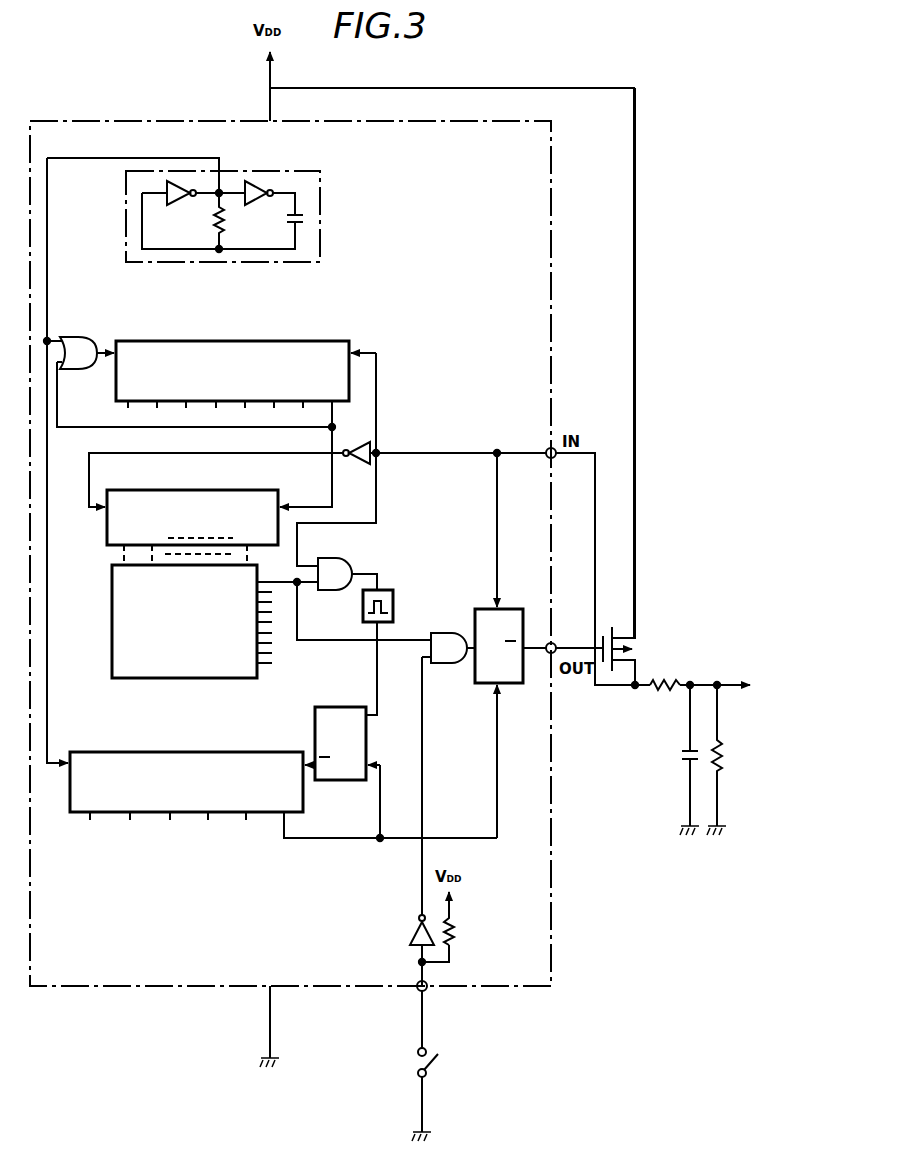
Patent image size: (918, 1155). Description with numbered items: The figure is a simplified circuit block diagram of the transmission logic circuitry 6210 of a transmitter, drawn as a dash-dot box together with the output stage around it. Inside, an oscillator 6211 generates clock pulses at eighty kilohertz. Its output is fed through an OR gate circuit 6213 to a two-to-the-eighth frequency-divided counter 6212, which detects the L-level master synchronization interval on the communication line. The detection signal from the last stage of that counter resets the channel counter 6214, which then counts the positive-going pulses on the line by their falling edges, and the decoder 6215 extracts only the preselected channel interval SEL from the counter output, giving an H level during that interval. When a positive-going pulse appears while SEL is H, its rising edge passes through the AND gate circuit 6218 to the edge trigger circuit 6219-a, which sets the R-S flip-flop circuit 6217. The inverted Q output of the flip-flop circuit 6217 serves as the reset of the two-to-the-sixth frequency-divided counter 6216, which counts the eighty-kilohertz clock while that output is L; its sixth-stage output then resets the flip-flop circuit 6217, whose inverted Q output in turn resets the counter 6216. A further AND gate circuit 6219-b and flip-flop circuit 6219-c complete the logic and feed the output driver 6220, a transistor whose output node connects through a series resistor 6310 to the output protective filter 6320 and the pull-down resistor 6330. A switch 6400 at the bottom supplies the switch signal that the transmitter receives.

The transmission logic circuitry 6210 is at (580, 174).
The oscillator 6211 is at (300, 171).
The 2^8-frequency-divided counter 6212 is at (218, 341).
The OR gate circuit 6213 is at (75, 337).
The channel counter 6214 is at (155, 490).
The decoder 6215 is at (133, 678).
The 2^6-frequency-divided counter 6216 is at (228, 752).
The flip-flop circuit 6217 is at (340, 781).
The AND gate circuit 6218 is at (337, 546).
The edge trigger circuit 6219-a is at (388, 590).
The AND gate circuit 6219-b is at (447, 632).
The flip-flop circuit 6219-c is at (480, 684).
The output driver 6220 is at (638, 641).
The resistor 6310 is at (660, 690).
The output protective filter 6320 is at (682, 755).
The pull-down resistor 6330 is at (725, 752).
The switch 6400 is at (440, 1060).